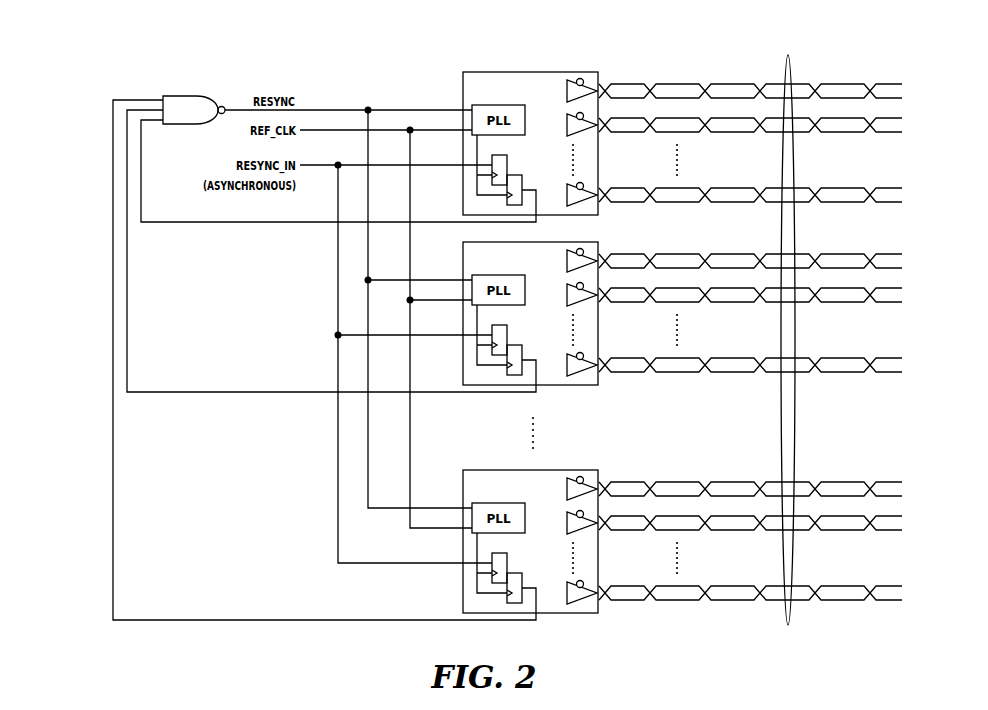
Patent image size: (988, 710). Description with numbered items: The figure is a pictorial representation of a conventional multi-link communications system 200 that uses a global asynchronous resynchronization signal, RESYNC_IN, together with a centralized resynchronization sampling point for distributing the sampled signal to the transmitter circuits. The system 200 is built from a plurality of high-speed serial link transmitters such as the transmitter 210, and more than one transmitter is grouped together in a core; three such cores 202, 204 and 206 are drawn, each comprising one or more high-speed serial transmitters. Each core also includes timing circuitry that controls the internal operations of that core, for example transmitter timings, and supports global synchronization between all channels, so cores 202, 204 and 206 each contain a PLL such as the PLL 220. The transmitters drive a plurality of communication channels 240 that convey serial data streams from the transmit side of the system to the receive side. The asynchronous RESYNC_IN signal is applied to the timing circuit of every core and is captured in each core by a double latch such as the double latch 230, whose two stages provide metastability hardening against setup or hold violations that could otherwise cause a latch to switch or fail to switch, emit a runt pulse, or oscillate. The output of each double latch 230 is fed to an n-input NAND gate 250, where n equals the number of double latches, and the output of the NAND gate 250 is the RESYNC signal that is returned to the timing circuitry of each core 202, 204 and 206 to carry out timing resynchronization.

The multi-link communications system 200 is at (104, 44).
The core 202 is at (497, 94).
The core 204 is at (497, 264).
The core 206 is at (497, 492).
The transmitter 210 is at (572, 79).
The PLL 220 is at (517, 105).
The double latch 230 is at (500, 157).
The communication channels 240 is at (786, 78).
The n-input NAND gate 250 is at (203, 118).